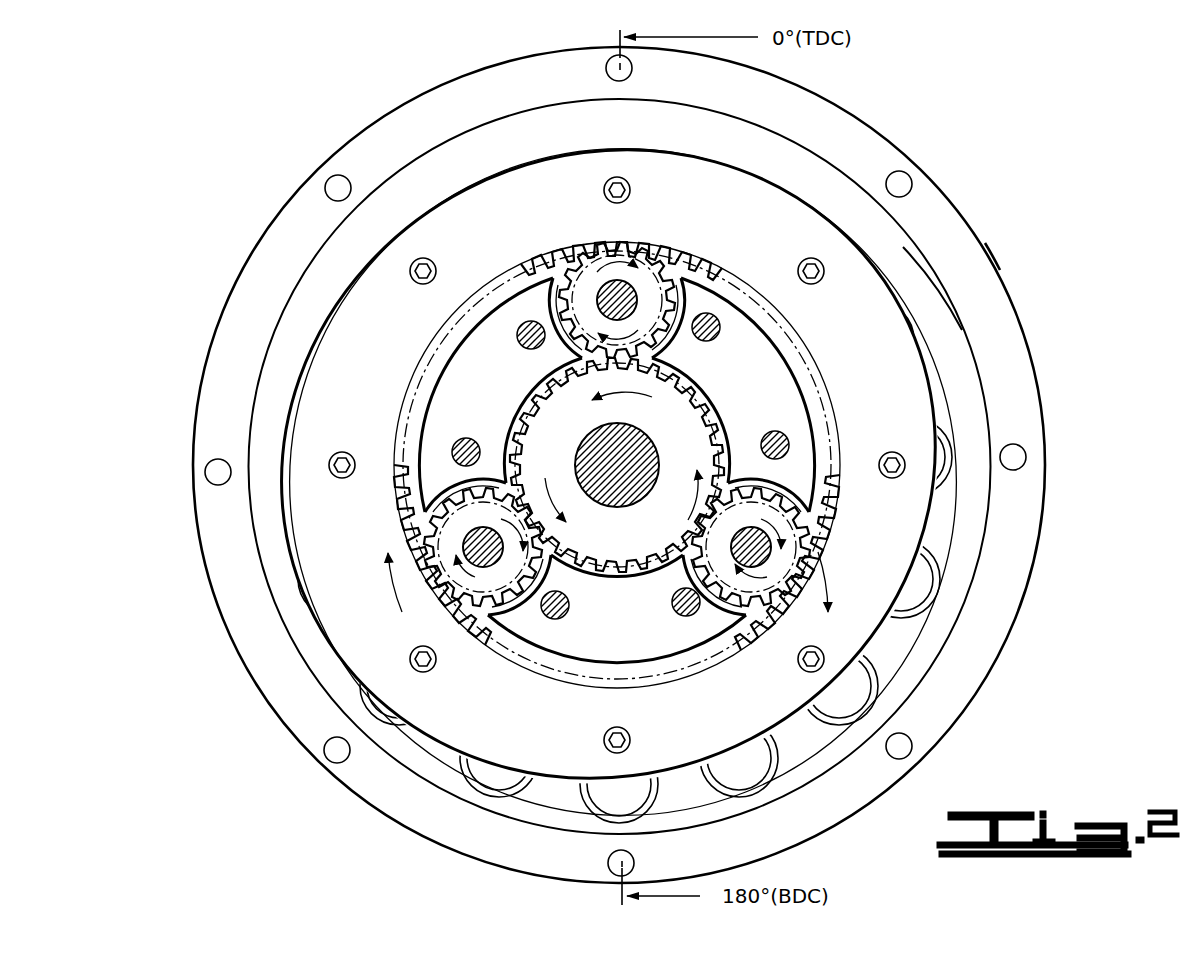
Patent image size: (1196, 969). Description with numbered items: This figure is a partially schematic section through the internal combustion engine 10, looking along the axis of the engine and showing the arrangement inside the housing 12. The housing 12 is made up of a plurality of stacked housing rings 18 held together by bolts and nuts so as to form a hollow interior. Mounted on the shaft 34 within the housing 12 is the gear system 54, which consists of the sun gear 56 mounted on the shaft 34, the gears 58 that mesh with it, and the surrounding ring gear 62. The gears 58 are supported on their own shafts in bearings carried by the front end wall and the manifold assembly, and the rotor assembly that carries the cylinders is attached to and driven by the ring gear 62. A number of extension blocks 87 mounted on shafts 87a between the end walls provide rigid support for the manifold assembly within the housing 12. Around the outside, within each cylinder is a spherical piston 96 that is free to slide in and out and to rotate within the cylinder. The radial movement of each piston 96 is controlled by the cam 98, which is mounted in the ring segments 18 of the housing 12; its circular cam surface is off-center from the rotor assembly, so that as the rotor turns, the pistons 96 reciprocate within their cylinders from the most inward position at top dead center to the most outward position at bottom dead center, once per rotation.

The internal combustion engine 10 is at (244, 205).
The housing 12 is at (958, 203).
The housing rings 18 is at (985, 243).
The cam 98 is at (950, 325).
The ring gear 62 is at (936, 540).
The spherical piston 96 is at (957, 480).
The gears 58 is at (416, 520).
The sun gear 56 is at (530, 393).
The extension blocks 87 is at (800, 412).
The shafts 87a is at (520, 322).
The shaft 34 is at (577, 449).
The gear system 54 is at (755, 238).